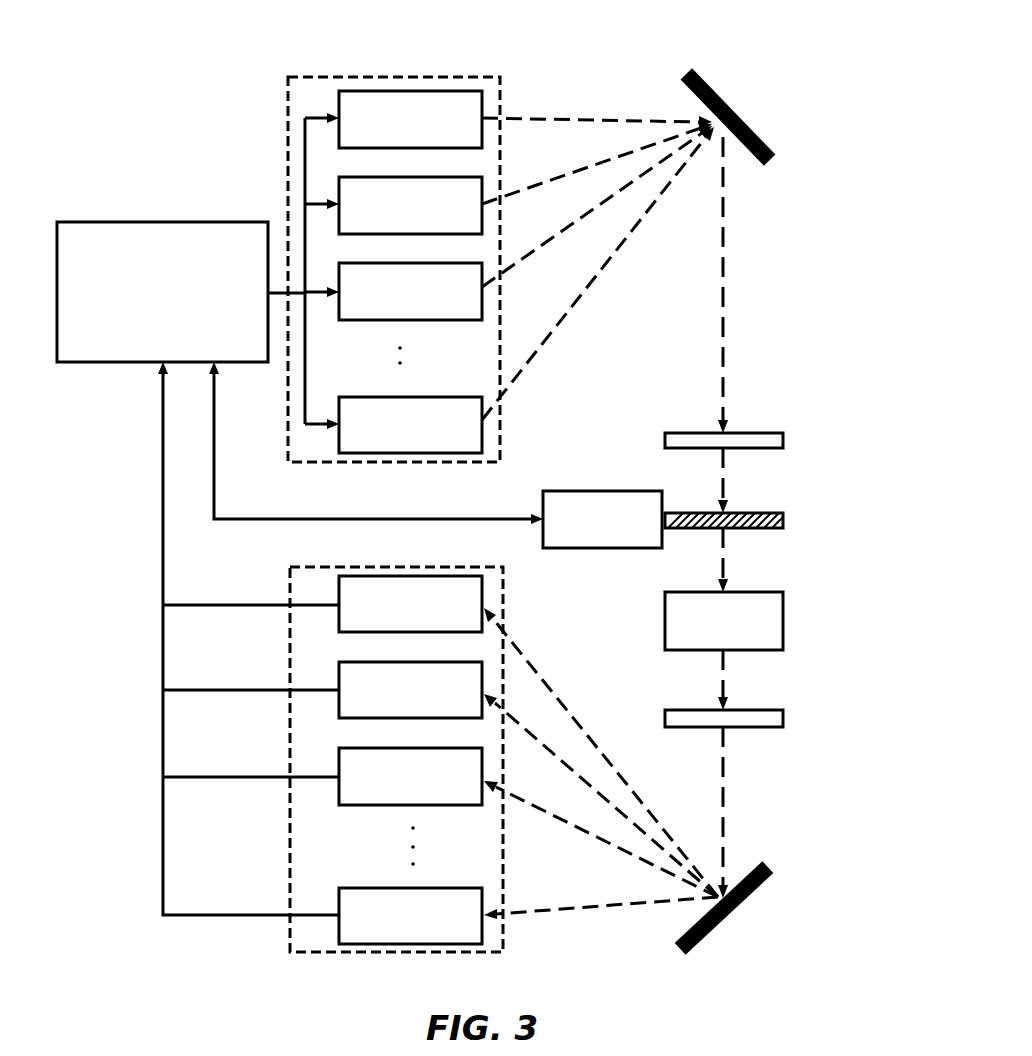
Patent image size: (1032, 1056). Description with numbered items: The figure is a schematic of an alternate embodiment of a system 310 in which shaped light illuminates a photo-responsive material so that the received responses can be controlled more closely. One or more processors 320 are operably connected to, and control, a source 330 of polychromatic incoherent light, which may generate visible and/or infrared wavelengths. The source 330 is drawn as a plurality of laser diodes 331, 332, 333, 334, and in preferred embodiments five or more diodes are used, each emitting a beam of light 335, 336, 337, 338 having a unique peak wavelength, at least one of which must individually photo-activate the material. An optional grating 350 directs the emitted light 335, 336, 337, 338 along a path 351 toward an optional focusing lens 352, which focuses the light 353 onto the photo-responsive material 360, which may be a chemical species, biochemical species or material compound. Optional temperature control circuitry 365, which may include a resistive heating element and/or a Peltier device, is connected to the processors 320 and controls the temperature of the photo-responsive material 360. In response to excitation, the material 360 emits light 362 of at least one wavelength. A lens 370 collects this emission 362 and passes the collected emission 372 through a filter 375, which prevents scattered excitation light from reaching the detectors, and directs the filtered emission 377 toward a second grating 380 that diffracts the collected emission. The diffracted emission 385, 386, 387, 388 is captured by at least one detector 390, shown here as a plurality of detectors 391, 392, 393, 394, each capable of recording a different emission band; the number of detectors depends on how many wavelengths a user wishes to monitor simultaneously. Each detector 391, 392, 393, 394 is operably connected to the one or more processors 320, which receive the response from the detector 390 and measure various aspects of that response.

The system 310 is at (188, 84).
The one or more processors 320 is at (294, 568).
The source of polychromatic incoherent light 330 is at (288, 183).
The laser diode 331 is at (410, 119).
The laser diode 332 is at (410, 205).
The laser diode 333 is at (410, 291).
The laser diode 334 is at (410, 425).
The beam of light 335 is at (584, 118).
The beam of light 336 is at (582, 168).
The beam of light 337 is at (510, 272).
The beam of light 338 is at (575, 300).
The grating 350 is at (735, 113).
The light directed toward focusing lens 351 is at (723, 293).
The focusing lens 352 is at (783, 443).
The focused light 353 is at (723, 493).
The photo-responsive material 360 is at (783, 521).
The emission 362 is at (723, 570).
The temperature control circuitry 365 is at (596, 519).
The lens 370 is at (783, 620).
The collected emission 372 is at (723, 688).
The filter 375 is at (783, 718).
The filtered emission directed toward grating 377 is at (723, 807).
The grating 380 is at (730, 917).
The diffracted emission 385 is at (537, 678).
The diffracted emission 386 is at (548, 753).
The diffracted emission 387 is at (603, 838).
The diffracted emission 388 is at (593, 912).
The detector 390 is at (288, 935).
The detector 391 is at (410, 604).
The detector 392 is at (410, 690).
The detector 393 is at (410, 776).
The detector 394 is at (410, 916).